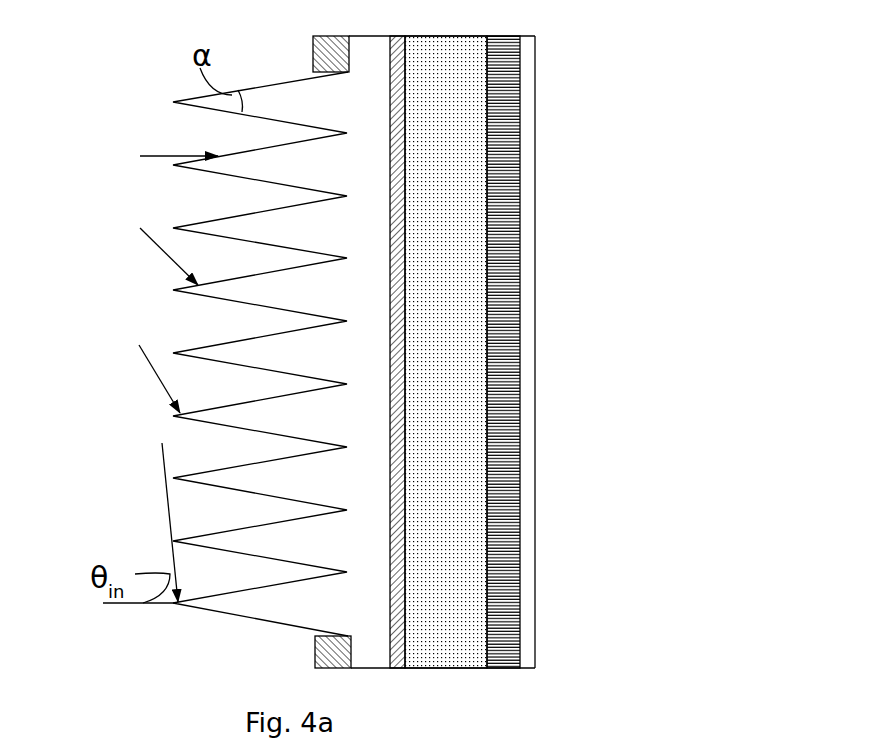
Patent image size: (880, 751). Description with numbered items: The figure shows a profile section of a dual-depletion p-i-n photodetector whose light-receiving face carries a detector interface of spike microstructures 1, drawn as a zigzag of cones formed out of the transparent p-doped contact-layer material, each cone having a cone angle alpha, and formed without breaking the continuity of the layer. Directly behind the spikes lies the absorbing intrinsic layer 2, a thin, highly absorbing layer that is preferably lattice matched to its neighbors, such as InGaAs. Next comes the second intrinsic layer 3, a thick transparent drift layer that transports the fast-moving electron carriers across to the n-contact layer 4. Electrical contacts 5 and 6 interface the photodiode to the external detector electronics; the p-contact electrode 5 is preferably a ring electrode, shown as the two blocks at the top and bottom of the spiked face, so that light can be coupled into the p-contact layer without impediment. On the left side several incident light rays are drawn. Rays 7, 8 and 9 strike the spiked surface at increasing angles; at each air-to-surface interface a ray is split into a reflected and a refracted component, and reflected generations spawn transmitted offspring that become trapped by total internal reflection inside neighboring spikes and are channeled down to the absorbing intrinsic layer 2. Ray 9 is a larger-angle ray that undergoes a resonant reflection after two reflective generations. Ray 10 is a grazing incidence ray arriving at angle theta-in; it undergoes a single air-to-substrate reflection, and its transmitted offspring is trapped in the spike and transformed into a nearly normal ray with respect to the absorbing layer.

The spike microstructures 1 is at (288, 98).
The absorbing intrinsic layer 2 is at (400, 50).
The second intrinsic layer 3 is at (448, 55).
The n-contact layer 4 is at (503, 55).
The p-contact electrode 5 is at (330, 52).
The electrical contact 6 is at (529, 57).
The incident ray 7 is at (153, 160).
The incident ray 8 is at (148, 245).
The larger-angle ray 9 is at (152, 377).
The grazing incidence ray 10 is at (162, 485).